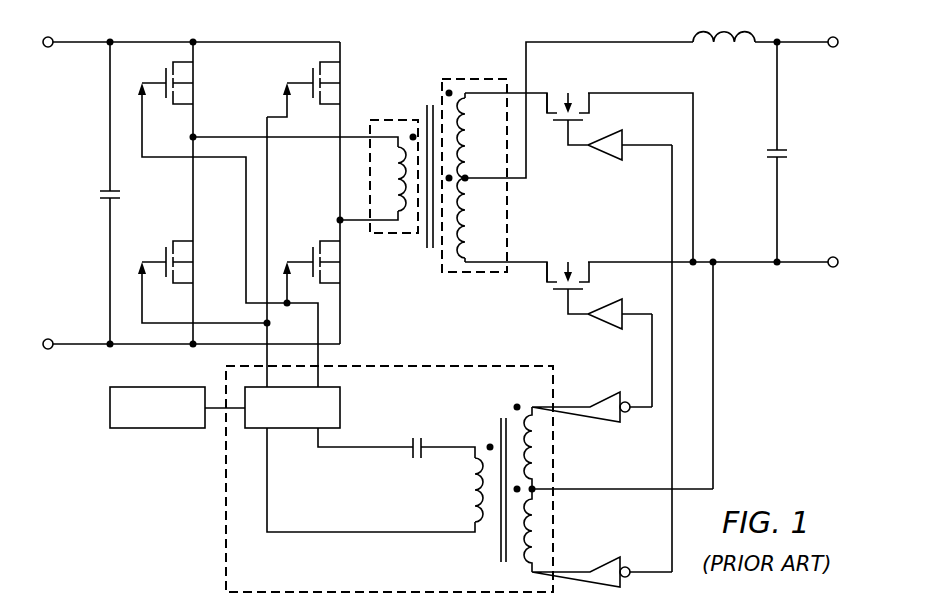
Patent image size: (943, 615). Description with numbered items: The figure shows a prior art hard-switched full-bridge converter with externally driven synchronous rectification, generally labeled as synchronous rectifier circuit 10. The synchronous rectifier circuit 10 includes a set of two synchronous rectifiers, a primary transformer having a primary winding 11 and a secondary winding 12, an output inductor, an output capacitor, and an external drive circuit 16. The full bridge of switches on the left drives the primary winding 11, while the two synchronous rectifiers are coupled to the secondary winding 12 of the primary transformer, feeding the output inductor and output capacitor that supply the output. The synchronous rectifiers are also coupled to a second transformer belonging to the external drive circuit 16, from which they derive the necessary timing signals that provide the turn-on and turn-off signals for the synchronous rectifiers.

The synchronous rectifier circuit 10 is at (112, 534).
The primary winding 11 is at (396, 236).
The secondary winding 12 is at (479, 272).
The external drive circuit 16 is at (415, 580).